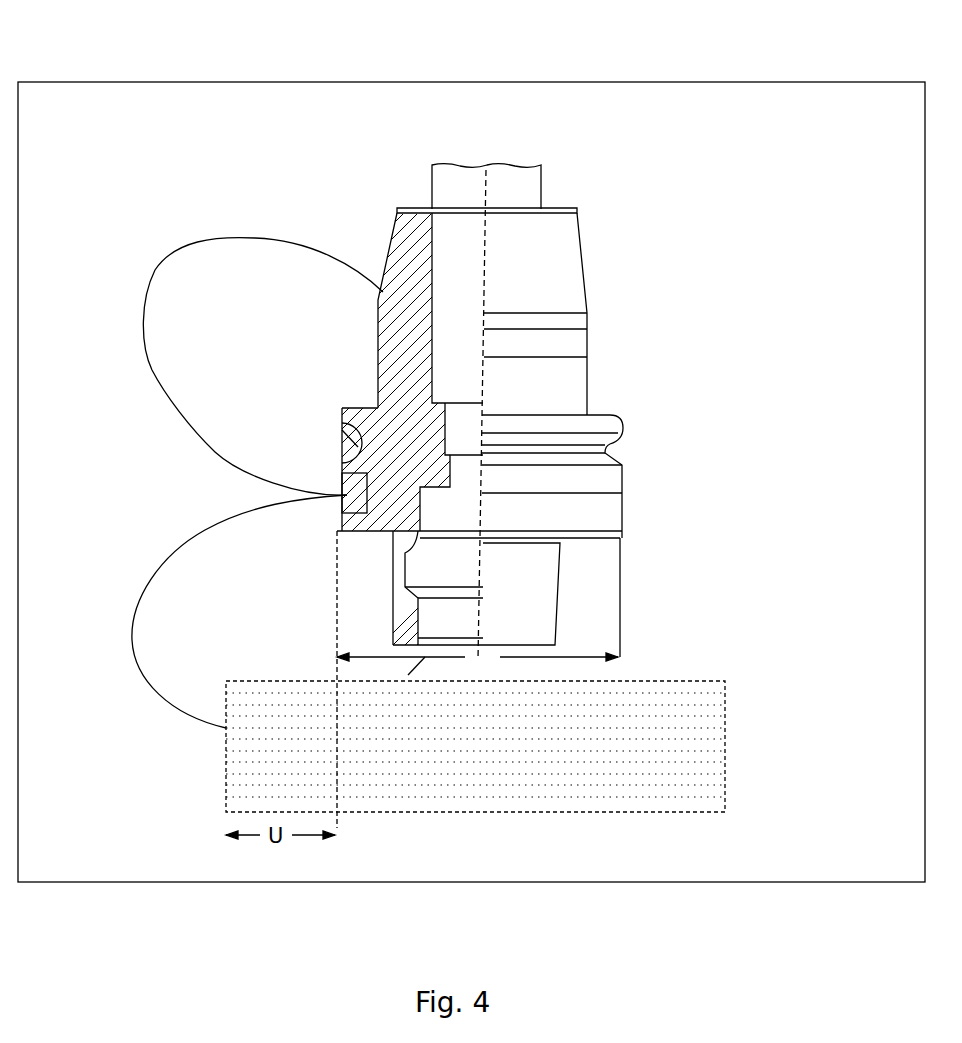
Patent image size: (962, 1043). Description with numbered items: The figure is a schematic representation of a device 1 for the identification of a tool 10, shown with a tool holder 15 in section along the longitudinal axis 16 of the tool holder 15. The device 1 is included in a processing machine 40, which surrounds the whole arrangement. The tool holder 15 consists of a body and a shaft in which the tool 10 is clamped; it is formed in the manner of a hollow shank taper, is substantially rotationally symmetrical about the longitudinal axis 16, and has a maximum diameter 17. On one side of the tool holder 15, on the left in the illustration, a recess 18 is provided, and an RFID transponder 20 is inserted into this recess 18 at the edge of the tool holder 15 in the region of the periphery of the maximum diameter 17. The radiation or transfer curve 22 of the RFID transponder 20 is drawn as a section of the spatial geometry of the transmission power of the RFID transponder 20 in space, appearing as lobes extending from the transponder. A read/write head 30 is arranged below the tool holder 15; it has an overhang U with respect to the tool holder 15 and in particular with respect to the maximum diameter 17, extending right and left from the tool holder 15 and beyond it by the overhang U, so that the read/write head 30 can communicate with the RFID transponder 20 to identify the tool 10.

The device 1 is at (652, 596).
The tool 10 is at (528, 192).
The tool holder 15 is at (605, 517).
The longitudinal axis 16 is at (477, 240).
The maximum diameter 17 is at (477, 660).
The recess 18 is at (355, 407).
The RFID transponder 20 is at (345, 496).
The radiation or transfer curve 22 is at (160, 383).
The read/write head 30 is at (226, 767).
The processing machine 40 is at (127, 123).